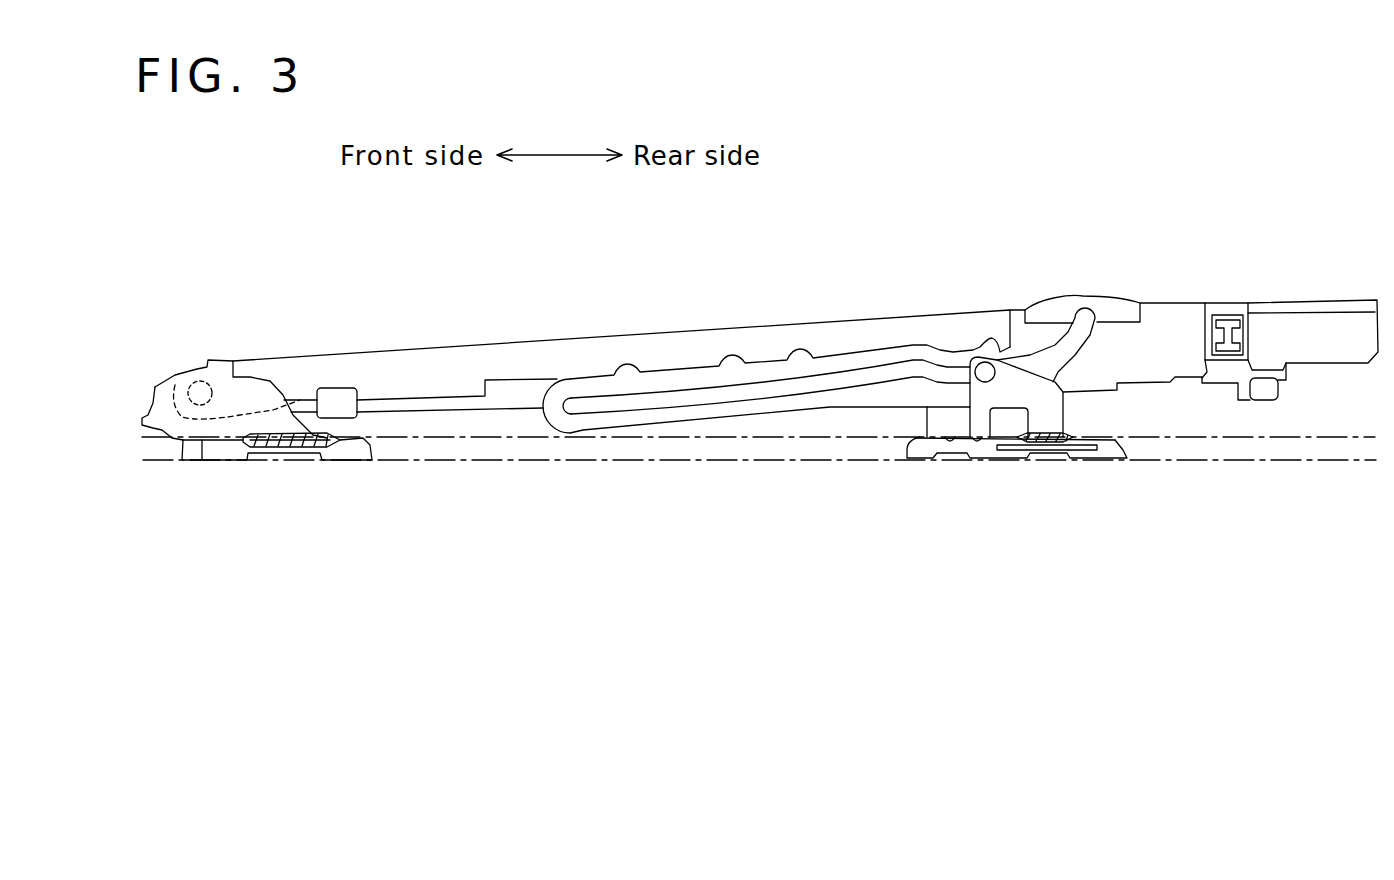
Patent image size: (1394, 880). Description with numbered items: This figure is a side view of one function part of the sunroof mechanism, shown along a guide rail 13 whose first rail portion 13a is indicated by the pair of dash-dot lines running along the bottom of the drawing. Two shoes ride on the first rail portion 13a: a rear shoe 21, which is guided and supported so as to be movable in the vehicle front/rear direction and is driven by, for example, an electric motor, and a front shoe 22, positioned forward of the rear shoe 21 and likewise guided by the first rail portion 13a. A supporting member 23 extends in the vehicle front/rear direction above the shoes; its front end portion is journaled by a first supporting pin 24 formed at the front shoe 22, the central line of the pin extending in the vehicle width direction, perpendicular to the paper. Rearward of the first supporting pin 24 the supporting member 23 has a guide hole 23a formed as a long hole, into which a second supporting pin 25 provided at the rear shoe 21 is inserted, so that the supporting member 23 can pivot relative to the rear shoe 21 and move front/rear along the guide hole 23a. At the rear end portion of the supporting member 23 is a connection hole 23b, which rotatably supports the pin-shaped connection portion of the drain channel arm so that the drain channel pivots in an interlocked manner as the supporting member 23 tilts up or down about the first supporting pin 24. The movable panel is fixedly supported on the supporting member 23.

The guide rail 13 is at (759, 495).
The first rail portion 13a is at (735, 461).
The rear shoe 21 is at (980, 452).
The front shoe 22 is at (227, 450).
The supporting member 23 is at (494, 352).
The guide hole 23a is at (820, 376).
The connection hole 23b is at (1228, 332).
The first supporting pin 24 is at (198, 380).
The second supporting pin 25 is at (986, 362).